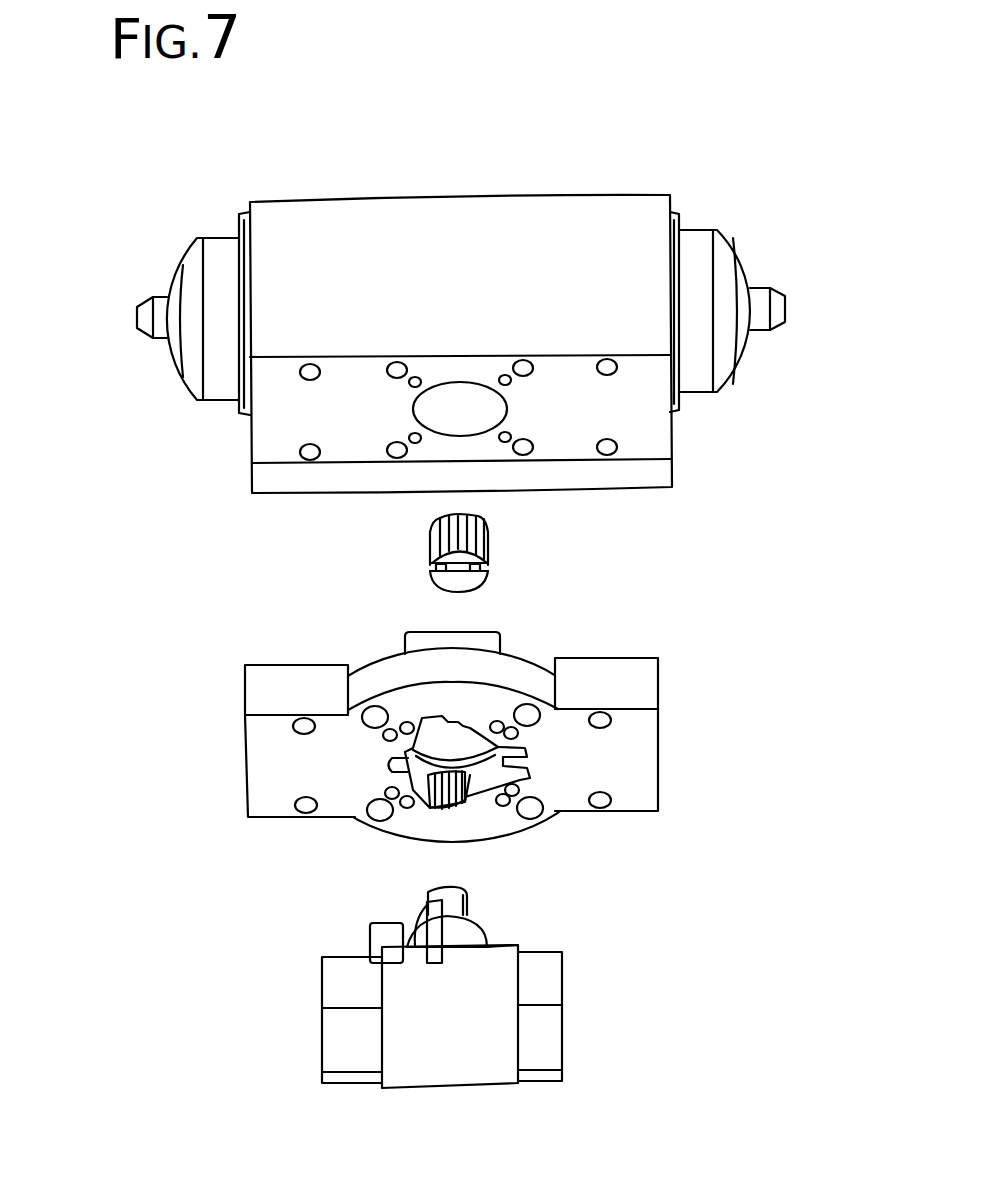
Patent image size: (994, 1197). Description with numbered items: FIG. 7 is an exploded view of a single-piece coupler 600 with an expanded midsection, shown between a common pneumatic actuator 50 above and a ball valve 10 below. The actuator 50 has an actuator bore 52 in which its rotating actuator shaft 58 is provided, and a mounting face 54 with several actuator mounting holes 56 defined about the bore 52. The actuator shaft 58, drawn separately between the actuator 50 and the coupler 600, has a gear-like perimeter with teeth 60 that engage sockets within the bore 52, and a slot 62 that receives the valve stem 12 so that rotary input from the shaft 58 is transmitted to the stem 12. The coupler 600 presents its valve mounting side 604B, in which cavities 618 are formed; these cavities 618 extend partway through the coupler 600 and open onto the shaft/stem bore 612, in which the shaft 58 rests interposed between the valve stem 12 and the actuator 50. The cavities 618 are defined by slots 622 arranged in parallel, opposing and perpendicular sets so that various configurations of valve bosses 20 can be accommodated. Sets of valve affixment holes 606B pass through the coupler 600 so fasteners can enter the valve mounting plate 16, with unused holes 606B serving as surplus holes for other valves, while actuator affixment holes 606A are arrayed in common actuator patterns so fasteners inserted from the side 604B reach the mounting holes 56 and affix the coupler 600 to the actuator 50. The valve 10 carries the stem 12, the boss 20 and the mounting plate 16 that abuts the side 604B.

The pneumatic actuator 50 is at (270, 198).
The actuator bore 52 is at (445, 383).
The actuator mounting face 54 is at (563, 373).
The actuator mounting holes 56 is at (617, 447).
The actuator shaft 58 is at (488, 541).
The teeth 60 is at (430, 540).
The slot 62 is at (460, 572).
The coupler 600 is at (245, 745).
The valve mounting side 604B is at (643, 747).
The actuator affixment holes 606A is at (612, 720).
The valve affixment holes 606B is at (548, 818).
The shaft/stem bore 612 is at (458, 725).
The cavities 618 is at (465, 803).
The slots 622 is at (455, 738).
The valve 10 is at (322, 1040).
The valve stem 12 is at (467, 902).
The valve mounting plate 16 is at (370, 930).
The valve boss 20 is at (428, 902).